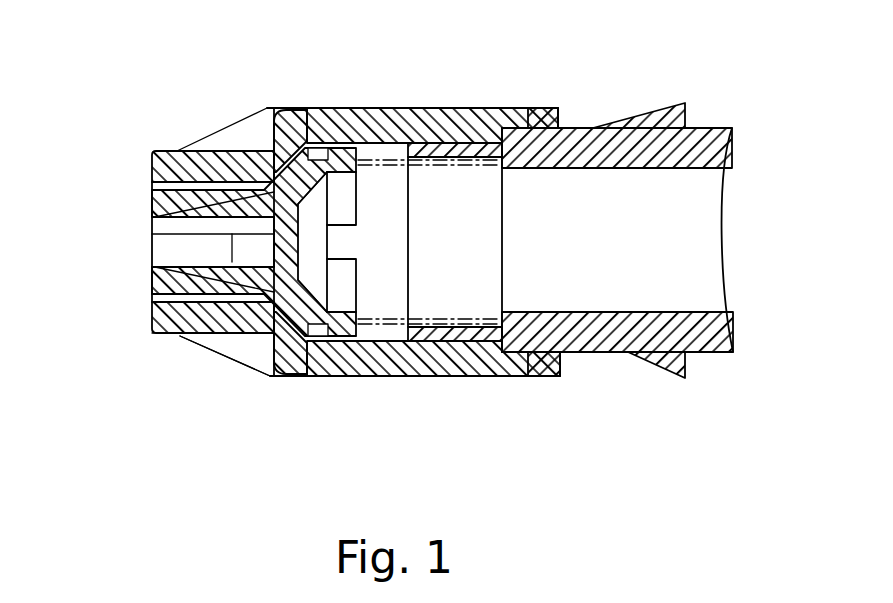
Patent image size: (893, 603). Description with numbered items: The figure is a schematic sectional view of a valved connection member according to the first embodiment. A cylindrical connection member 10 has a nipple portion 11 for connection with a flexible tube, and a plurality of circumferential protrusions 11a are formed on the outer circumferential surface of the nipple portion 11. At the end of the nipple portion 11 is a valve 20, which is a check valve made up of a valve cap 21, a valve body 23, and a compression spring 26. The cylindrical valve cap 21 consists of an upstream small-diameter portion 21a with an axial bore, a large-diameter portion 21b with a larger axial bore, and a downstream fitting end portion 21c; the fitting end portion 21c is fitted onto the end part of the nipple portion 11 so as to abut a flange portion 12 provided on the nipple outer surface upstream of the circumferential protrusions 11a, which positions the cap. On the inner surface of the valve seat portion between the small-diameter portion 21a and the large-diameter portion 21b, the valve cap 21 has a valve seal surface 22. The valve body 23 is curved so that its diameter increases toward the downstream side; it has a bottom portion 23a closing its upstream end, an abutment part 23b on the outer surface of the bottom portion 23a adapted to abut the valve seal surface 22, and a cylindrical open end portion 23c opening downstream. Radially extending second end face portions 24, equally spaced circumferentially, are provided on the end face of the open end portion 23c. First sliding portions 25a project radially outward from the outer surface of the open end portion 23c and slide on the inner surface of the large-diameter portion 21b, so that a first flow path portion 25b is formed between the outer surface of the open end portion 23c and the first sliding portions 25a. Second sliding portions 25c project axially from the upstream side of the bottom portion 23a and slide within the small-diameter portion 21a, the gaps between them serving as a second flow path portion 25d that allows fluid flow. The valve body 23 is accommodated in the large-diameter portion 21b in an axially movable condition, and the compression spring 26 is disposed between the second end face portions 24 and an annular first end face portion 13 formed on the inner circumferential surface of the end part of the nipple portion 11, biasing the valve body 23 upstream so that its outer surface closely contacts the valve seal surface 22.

The connection member 10 is at (627, 245).
The nipple portion 11 is at (598, 126).
The circumferential protrusions 11a is at (656, 354).
The flange portion 12 is at (549, 106).
The first end face portion 13 is at (490, 348).
The valve 20 is at (305, 245).
The valve cap 21 is at (356, 257).
The small-diameter portion 21a is at (205, 165).
The large-diameter portion 21b is at (430, 120).
The fitting end portion 21c is at (486, 118).
The valve seal surface 22 is at (288, 112).
The valve body 23 is at (298, 378).
The bottom portion 23a is at (195, 341).
The abutment part 23b is at (262, 367).
The open end portion 23c is at (350, 342).
The second end face portions 24 is at (368, 122).
The first sliding portions 25a is at (322, 338).
The first flow path portion 25b is at (342, 278).
The second sliding portions 25c is at (177, 278).
The second flow path portion 25d is at (160, 212).
The compression spring 26 is at (404, 383).